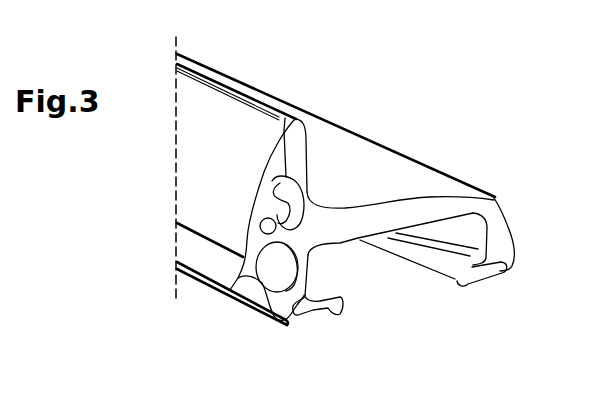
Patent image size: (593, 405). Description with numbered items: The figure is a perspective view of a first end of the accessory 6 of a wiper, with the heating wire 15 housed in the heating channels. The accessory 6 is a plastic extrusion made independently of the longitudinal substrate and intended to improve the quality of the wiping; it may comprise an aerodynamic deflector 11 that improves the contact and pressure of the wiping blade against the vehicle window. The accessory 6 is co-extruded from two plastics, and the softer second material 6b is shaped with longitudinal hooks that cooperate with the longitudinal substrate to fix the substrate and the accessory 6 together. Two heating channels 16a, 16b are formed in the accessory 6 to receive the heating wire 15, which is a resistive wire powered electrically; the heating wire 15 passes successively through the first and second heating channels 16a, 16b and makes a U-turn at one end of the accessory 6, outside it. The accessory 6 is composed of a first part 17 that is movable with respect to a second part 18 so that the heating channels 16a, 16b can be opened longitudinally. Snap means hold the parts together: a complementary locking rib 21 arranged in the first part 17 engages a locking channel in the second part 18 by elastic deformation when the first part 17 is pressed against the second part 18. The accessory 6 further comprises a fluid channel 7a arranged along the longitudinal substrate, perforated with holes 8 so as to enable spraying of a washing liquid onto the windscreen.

The accessory 6 is at (489, 192).
The second material 6b is at (308, 305).
The fluid channel 7a is at (250, 268).
The holes 8 is at (202, 280).
The aerodynamic deflector 11 is at (207, 98).
The heating wire 15 is at (313, 201).
The first heating channel 16a is at (285, 118).
The second heating channel 16b is at (243, 272).
The first part 17 is at (268, 202).
The second part 18 is at (503, 241).
The locking rib 21 is at (260, 222).